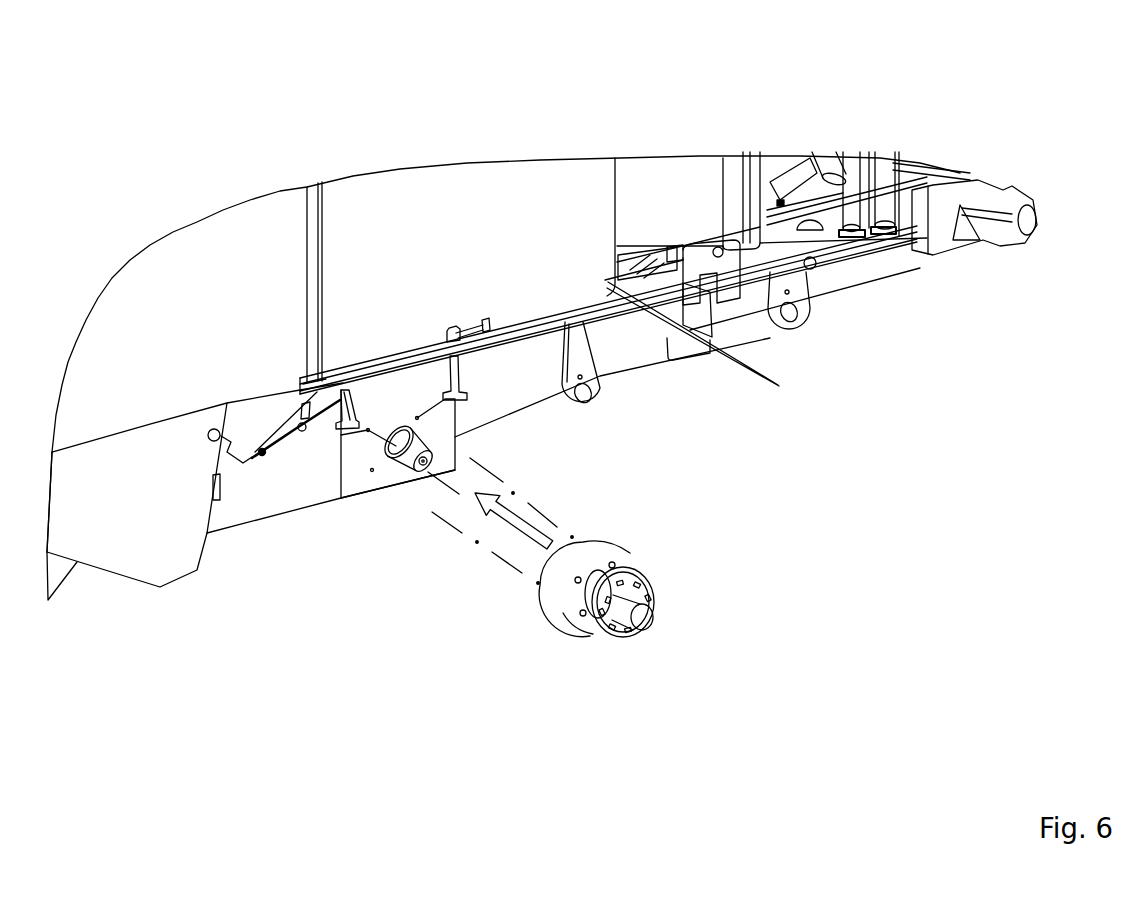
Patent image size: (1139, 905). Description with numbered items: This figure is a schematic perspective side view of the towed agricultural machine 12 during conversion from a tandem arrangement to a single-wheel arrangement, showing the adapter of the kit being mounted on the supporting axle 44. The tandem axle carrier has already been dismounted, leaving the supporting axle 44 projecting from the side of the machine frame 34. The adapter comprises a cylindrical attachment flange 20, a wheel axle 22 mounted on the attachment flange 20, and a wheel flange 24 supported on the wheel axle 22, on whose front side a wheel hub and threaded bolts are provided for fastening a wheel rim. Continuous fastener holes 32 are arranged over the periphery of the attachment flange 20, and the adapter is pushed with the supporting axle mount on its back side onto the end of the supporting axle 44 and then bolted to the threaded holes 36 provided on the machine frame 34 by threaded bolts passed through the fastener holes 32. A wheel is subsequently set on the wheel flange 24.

The towed agricultural machine 12 is at (908, 112).
The attachment flange 20 is at (570, 593).
The wheel axle 22 is at (588, 587).
The wheel flange 24 is at (593, 625).
The fastener holes 32 is at (597, 548).
The machine frame 34 is at (273, 490).
The threaded holes 36 is at (368, 430).
The supporting axle 44 is at (407, 468).